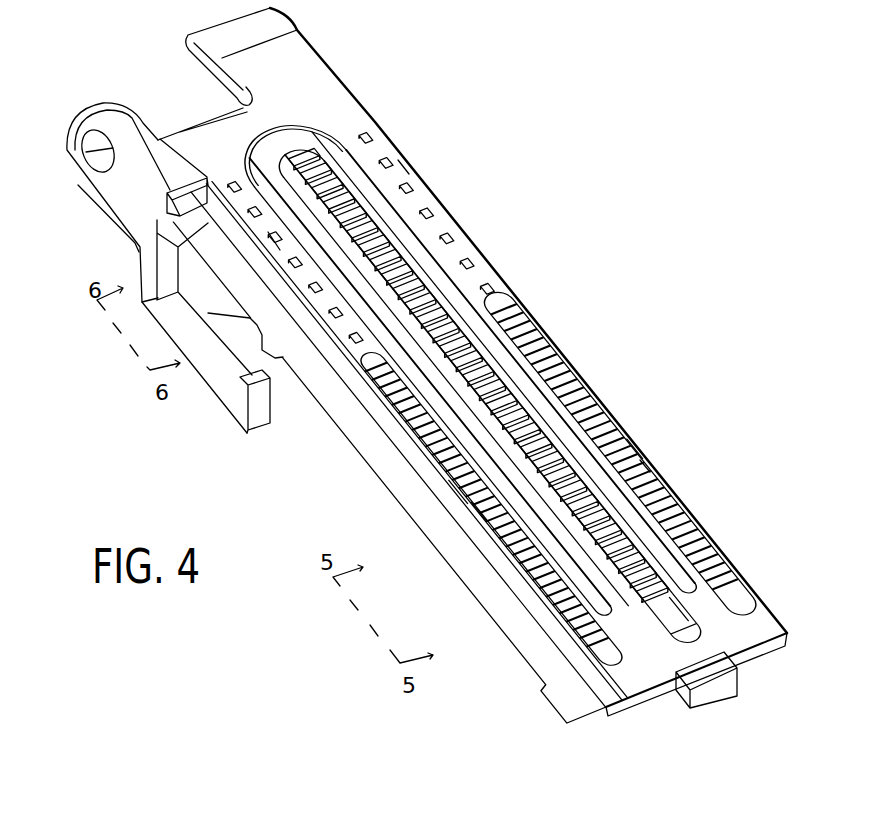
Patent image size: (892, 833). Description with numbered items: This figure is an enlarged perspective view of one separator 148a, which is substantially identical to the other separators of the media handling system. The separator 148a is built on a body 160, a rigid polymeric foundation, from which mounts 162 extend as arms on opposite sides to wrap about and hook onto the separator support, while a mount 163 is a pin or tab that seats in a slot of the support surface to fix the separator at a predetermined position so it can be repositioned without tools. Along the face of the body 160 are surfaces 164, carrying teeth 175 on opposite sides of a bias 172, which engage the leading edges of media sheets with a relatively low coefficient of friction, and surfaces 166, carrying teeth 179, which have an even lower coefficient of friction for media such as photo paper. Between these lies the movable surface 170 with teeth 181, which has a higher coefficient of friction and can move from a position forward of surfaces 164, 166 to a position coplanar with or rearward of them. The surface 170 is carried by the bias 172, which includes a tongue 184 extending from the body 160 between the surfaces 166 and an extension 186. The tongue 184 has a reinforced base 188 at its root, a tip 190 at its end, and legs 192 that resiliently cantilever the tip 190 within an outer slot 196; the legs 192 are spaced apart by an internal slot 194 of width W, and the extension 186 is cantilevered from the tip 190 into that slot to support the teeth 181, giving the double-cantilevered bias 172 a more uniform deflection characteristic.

The separator 148a is at (421, 110).
The body 160 is at (467, 240).
The mounts 162 is at (215, 383).
The mount 163 is at (682, 705).
The surfaces 164 is at (643, 467).
The surfaces 166 is at (411, 168).
The surface 170 is at (477, 351).
The bias 172 is at (585, 568).
The teeth 175 is at (633, 450).
The teeth 179 is at (440, 207).
The teeth 181 is at (550, 400).
The tongue 184 is at (419, 363).
The extension 186 is at (475, 390).
The base 188 is at (620, 600).
The tip 190 is at (347, 253).
The legs 192 is at (495, 355).
The internal slot 194 is at (753, 657).
The outer slot 196 is at (352, 165).
The width W is at (668, 648).